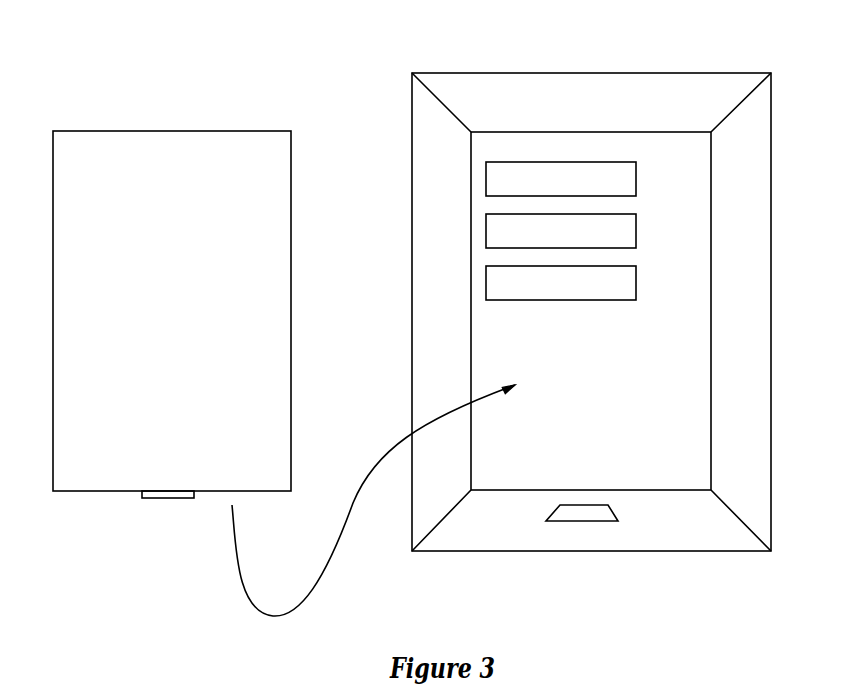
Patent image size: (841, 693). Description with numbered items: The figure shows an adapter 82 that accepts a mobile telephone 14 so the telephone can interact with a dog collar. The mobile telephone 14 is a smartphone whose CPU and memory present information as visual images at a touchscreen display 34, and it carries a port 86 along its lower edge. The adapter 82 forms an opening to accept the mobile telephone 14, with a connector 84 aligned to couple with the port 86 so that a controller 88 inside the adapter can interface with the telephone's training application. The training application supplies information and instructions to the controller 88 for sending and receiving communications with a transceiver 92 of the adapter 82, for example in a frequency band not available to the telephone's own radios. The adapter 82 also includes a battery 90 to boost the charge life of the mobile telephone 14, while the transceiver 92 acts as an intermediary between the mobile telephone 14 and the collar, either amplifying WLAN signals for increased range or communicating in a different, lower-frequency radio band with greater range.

The mobile telephone 14 is at (262, 68).
The touchscreen display 34 is at (152, 310).
The port 86 is at (157, 498).
The adapter 82 is at (592, 71).
The battery 90 is at (561, 179).
The transceiver 92 is at (561, 231).
The controller 88 is at (561, 283).
The connector 84 is at (696, 597).